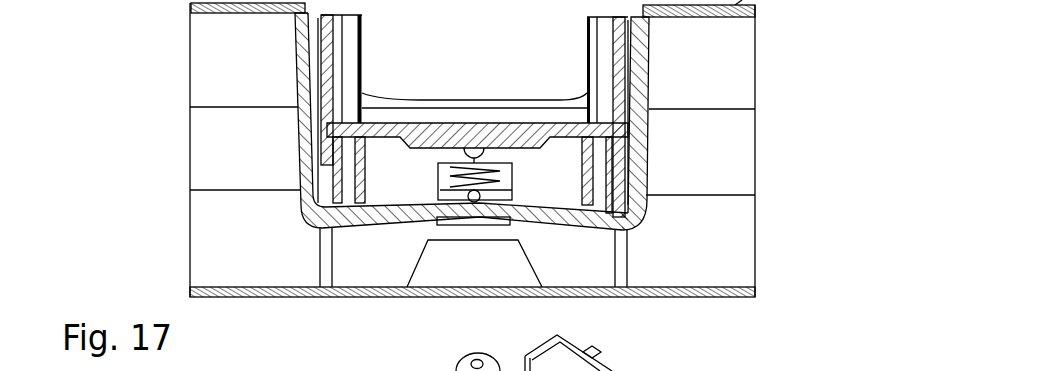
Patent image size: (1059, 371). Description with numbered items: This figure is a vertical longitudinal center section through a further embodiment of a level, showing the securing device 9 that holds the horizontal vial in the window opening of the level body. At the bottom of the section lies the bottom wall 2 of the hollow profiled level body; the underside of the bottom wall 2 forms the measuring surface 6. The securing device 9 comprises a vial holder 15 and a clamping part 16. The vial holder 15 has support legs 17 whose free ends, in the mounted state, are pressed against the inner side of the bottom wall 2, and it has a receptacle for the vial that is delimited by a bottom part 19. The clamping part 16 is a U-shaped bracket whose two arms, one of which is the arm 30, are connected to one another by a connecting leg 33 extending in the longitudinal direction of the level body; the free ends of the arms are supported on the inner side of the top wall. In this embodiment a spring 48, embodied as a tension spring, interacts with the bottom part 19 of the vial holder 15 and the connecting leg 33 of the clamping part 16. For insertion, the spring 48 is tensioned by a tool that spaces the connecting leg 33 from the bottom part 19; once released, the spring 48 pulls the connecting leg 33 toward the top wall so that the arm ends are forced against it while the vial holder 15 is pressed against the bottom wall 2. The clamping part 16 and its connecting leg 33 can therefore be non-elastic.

The bottom wall 2 is at (275, 297).
The measuring surface 6 is at (428, 298).
The securing device 9 is at (720, 147).
The vial holder 15 is at (636, 248).
The clamping part 16 is at (654, 184).
The support legs 17 is at (602, 272).
The bottom part 19 is at (518, 127).
The arm 30 is at (645, 84).
The connecting leg 33 is at (560, 215).
The spring 48 is at (430, 215).